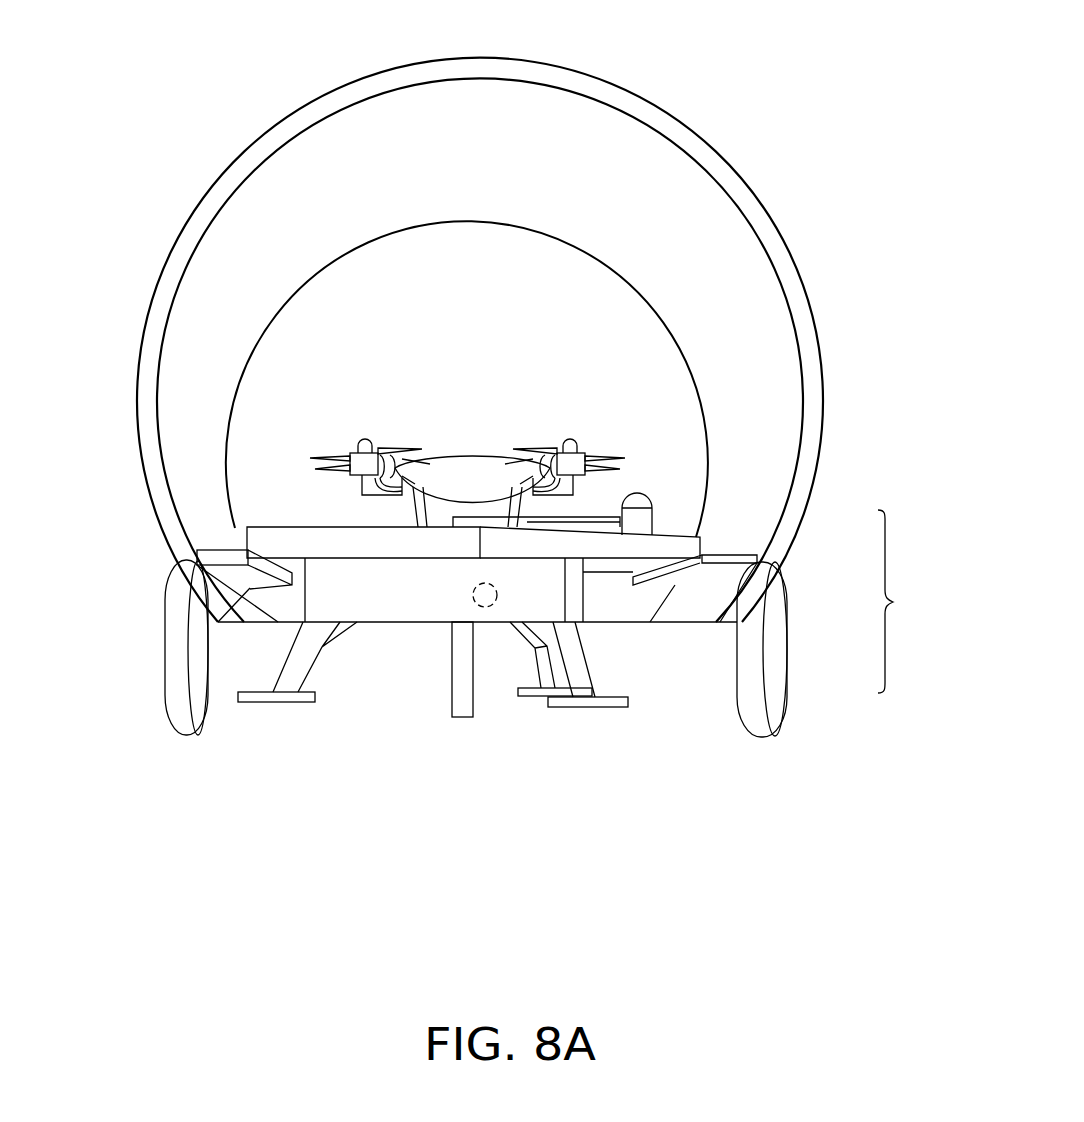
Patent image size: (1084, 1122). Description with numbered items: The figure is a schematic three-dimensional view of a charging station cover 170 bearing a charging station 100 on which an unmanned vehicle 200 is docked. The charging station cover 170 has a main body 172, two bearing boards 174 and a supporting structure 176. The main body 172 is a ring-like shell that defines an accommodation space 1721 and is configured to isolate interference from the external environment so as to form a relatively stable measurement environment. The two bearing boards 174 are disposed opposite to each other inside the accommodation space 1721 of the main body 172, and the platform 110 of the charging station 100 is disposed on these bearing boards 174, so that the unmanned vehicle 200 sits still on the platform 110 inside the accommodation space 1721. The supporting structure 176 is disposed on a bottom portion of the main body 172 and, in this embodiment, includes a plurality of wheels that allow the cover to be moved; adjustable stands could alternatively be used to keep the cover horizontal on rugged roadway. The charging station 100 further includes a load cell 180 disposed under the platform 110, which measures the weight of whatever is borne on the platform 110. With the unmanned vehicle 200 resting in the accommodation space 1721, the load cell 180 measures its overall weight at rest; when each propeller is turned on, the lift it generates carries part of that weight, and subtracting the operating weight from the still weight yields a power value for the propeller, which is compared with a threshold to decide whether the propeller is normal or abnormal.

The charging station 100 is at (410, 578).
The platform 110 is at (312, 540).
The charging station cover 170 is at (911, 601).
The main body 172 is at (810, 463).
The accommodation space 1721 is at (550, 283).
The bearing board 174 is at (222, 557).
The supporting structure 176 is at (182, 725).
The load cell 180 is at (478, 607).
The unmanned vehicle 200 is at (463, 470).